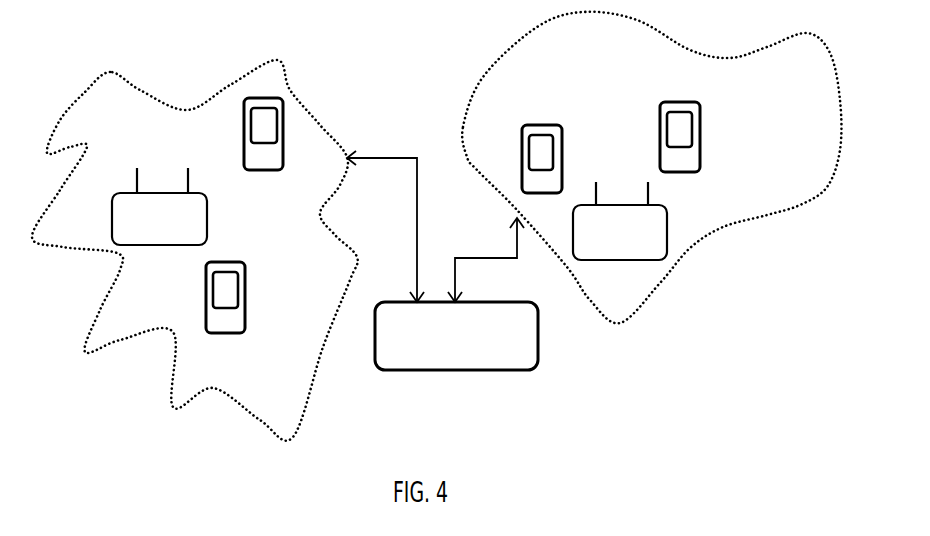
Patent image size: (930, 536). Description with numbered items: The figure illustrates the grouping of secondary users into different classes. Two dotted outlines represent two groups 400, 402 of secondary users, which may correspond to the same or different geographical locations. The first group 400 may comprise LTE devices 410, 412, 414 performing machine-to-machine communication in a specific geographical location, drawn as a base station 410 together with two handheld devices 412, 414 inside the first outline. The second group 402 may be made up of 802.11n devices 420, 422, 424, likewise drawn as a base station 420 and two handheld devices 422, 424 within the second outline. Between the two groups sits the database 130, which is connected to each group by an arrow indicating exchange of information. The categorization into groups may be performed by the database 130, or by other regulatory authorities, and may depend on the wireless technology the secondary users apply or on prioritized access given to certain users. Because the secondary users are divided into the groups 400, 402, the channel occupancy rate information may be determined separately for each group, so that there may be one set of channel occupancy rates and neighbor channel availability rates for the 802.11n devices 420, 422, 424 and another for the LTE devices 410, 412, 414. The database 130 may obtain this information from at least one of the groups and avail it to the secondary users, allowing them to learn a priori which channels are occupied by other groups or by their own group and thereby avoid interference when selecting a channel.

The group of secondary users 400 is at (110, 73).
The group of secondary users 402 is at (723, 228).
The LTE device 410 is at (187, 247).
The LTE device 412 is at (245, 268).
The LTE device 414 is at (283, 107).
The 802.11n device 420 is at (650, 258).
The 802.11n device 422 is at (562, 128).
The 802.11n device 424 is at (700, 107).
The database 130 is at (442, 260).